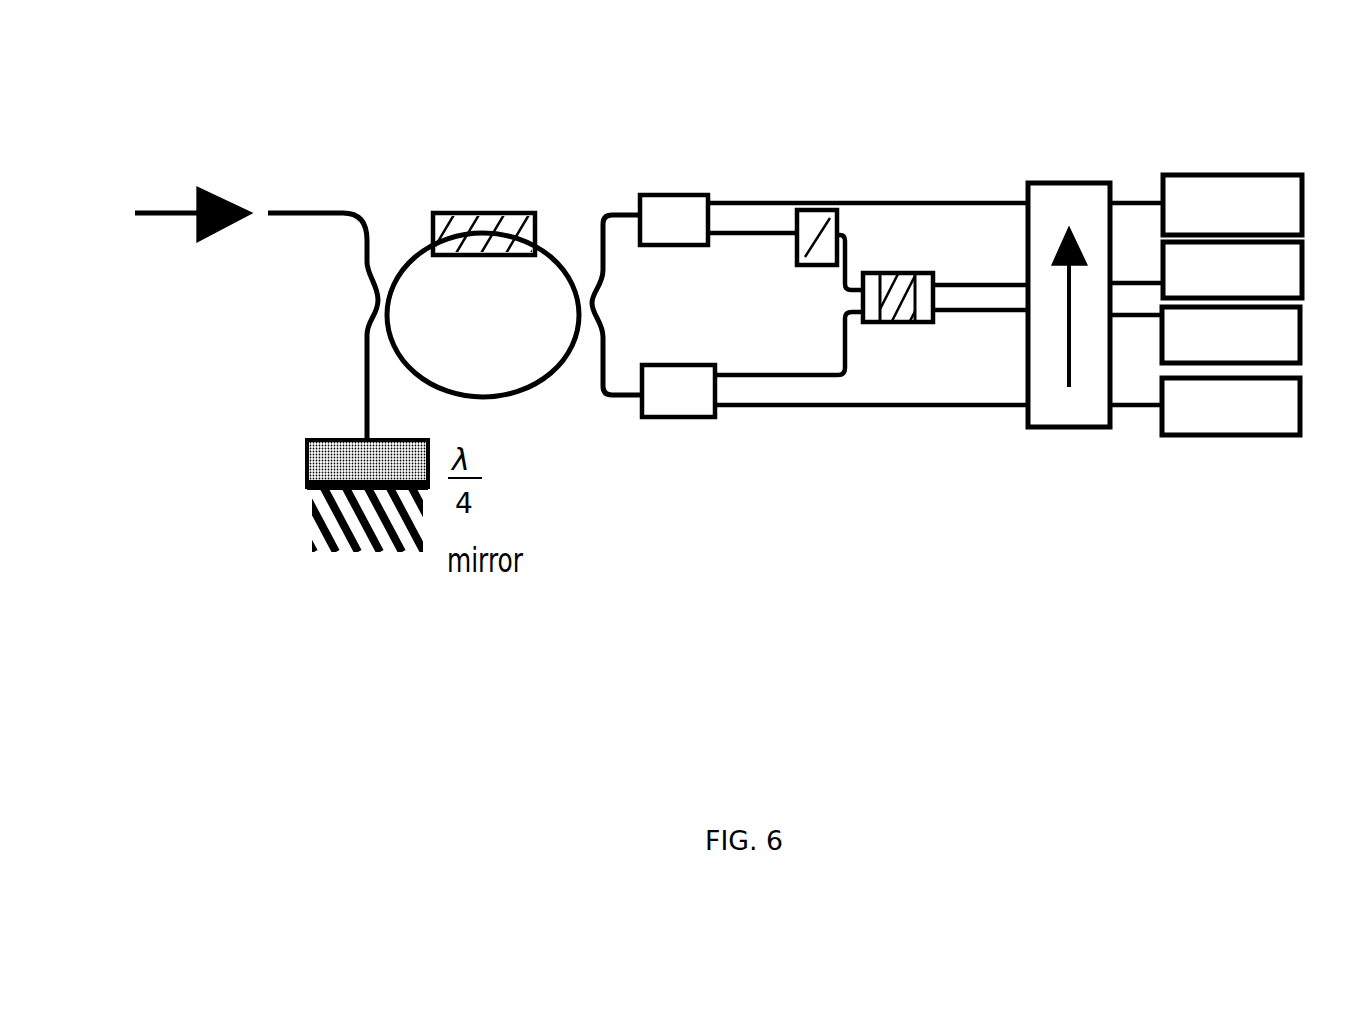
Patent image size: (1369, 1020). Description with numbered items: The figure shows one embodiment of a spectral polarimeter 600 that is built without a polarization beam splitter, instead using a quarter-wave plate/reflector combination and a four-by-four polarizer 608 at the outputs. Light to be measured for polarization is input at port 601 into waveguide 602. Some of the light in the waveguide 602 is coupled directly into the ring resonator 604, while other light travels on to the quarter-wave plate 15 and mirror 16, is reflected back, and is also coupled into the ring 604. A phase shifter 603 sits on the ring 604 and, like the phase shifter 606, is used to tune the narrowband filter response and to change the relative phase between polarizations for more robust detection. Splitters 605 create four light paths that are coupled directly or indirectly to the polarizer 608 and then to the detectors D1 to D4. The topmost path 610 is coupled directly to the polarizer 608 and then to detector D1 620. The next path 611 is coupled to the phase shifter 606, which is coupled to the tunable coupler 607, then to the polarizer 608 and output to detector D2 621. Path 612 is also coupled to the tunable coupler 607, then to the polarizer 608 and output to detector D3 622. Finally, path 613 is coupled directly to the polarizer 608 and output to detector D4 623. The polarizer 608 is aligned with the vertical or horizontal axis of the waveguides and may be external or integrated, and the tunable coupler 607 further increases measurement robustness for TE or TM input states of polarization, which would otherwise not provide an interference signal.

The spectral polarimeter 600 is at (302, 109).
The port 601 is at (143, 203).
The waveguide 602 is at (323, 188).
The phase shifter 603 is at (498, 188).
The ring resonator 604 is at (525, 405).
The splitters 605 is at (680, 182).
The phase shifter 606 is at (827, 198).
The tunable coupler 607 is at (910, 260).
The polarizer 608 is at (1070, 170).
The topmost path 610 is at (722, 201).
The path 611 is at (720, 242).
The path 612 is at (722, 370).
The path 613 is at (722, 417).
The detector D1 620 is at (1227, 205).
The detector D2 621 is at (1227, 270).
The detector D3 622 is at (1227, 335).
The detector D4 623 is at (1227, 406).
The quarter-wave plate 15 is at (290, 453).
The mirror 16 is at (292, 528).